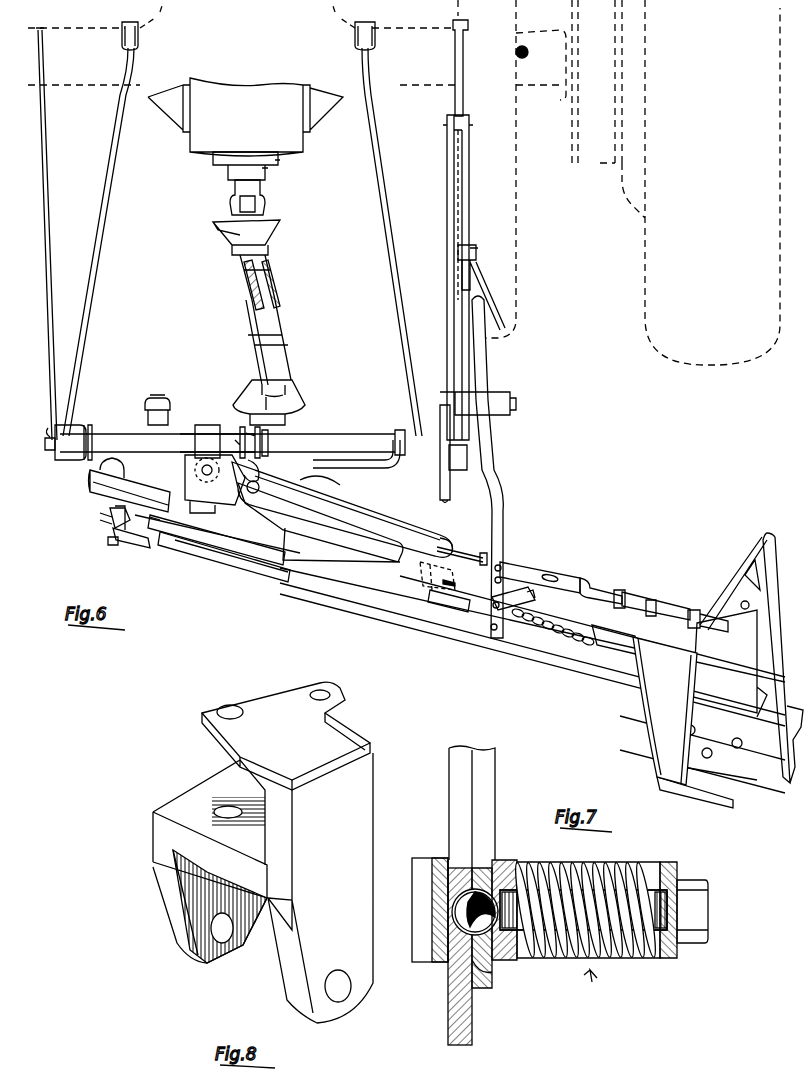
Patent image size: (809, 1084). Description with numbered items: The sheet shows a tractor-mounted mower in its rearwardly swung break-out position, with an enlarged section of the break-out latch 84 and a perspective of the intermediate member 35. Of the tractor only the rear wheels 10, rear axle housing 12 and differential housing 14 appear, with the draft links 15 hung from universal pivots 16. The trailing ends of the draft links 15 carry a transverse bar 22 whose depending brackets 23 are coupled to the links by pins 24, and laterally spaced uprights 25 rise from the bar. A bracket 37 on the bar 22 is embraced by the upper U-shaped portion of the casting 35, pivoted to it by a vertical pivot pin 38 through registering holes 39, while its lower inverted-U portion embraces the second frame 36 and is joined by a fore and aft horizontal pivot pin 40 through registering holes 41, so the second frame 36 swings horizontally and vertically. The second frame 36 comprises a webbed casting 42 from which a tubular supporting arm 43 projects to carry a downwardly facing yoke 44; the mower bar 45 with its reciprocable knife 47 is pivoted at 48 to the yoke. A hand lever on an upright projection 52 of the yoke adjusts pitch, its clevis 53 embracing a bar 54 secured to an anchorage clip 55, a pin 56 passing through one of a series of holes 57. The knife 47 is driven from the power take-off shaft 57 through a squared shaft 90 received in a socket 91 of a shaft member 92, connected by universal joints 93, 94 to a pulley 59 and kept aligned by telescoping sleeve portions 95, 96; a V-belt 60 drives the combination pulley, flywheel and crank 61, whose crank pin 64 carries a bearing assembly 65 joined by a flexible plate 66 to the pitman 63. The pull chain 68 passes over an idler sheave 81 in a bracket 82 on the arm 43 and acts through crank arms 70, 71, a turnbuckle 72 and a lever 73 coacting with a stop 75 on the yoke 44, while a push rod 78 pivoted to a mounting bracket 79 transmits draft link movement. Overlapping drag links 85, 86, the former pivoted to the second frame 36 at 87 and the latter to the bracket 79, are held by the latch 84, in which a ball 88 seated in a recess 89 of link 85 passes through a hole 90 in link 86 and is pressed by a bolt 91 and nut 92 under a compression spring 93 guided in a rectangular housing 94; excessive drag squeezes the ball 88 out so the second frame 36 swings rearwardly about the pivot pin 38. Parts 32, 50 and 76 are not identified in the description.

In FIG. 6, the rear wheels 10 is at (645, 268).
In FIG. 6, the rear axle housing 12 is at (418, 88).
In FIG. 6, the differential housing 14 is at (305, 150).
In FIG. 6, the draft links 15 is at (108, 212).
In FIG. 6, the universal pivots 16 is at (140, 34).
In FIG. 6, the transverse bar 22 is at (112, 432).
In FIG. 6, the depending brackets 23 is at (74, 460).
In FIG. 6, the pins 24 is at (52, 450).
In FIG. 6, the uprights 25 is at (250, 398).
In FIG. 6, the rod 32 is at (47, 145).
In FIG. 6, the intermediate member 35 is at (190, 470).
In FIG. 8, the intermediate member 35 is at (372, 750).
In FIG. 6, the second frame 36 is at (372, 568).
In FIG. 6, the bracket 37 is at (205, 425).
In FIG. 6, the vertical pivot pin 38 is at (196, 455).
In FIG. 8, the registering holes 39 is at (222, 708).
In FIG. 6, the horizontal pivot pin 40 is at (190, 530).
In FIG. 8, the registering holes 41 is at (228, 935).
In FIG. 6, the casting 42 is at (318, 492).
In FIG. 6, the tubular supporting arm 43 is at (400, 625).
In FIG. 6, the yoke 44 is at (640, 718).
In FIG. 6, the mower bar 45 is at (761, 790).
In FIG. 6, the knife 47 is at (755, 690).
In FIG. 6, the pivot 48 is at (660, 782).
In FIG. 6, the rod 50 is at (578, 588).
In FIG. 6, the upright projection 52 is at (625, 600).
In FIG. 6, the clevis 53 is at (520, 572).
In FIG. 6, the bar 54 is at (495, 478).
In FIG. 6, the anchorage clip 55 is at (472, 252).
In FIG. 6, the pin 56 is at (520, 612).
In FIG. 6, the power take-off shaft 57 is at (232, 176).
In FIG. 6, the pulley 59 is at (300, 548).
In FIG. 6, the V-belt 60 is at (248, 550).
In FIG. 6, the combination pulley, flywheel and crank 61 is at (88, 502).
In FIG. 6, the pitman 63 is at (340, 600).
In FIG. 6, the crank pin 64 is at (100, 517).
In FIG. 6, the bearing assembly 65 is at (104, 540).
In FIG. 6, the sheet metal plate 66 is at (160, 550).
In FIG. 6, the pull chain 68 is at (565, 633).
In FIG. 6, the crank arm 70 is at (592, 652).
In FIG. 6, the crank arm 71 is at (625, 598).
In FIG. 6, the turnbuckle 72 is at (652, 602).
In FIG. 6, the lever 73 is at (735, 590).
In FIG. 6, the stop 75 is at (694, 612).
In FIG. 6, the rod 76 is at (385, 474).
In FIG. 6, the push rod 78 is at (447, 226).
In FIG. 6, the mounting bracket 79 is at (462, 103).
In FIG. 6, the idler sheave 81 is at (440, 615).
In FIG. 6, the bracket 82 is at (450, 592).
In FIG. 6, the latch 84 is at (511, 383).
In FIG. 7, the latch 84 is at (597, 978).
In FIG. 6, the drag link 85 is at (442, 496).
In FIG. 7, the drag link 85 is at (458, 1030).
In FIG. 6, the drag link 86 is at (470, 188).
In FIG. 7, the drag link 86 is at (495, 812).
In FIG. 6, the pivot 87 is at (444, 534).
In FIG. 7, the ball 88 is at (458, 912).
In FIG. 7, the recess 89 is at (430, 923).
In FIG. 6, the squared shaft 90 is at (272, 278).
In FIG. 7, the squared shaft 90 is at (494, 970).
In FIG. 6, the bolt 91 is at (270, 272).
In FIG. 7, the bolt 91 is at (708, 910).
In FIG. 6, the nut 92 is at (268, 246).
In FIG. 7, the nut 92 is at (512, 866).
In FIG. 6, the compression spring 93 is at (290, 418).
In FIG. 7, the compression spring 93 is at (585, 866).
In FIG. 6, the housing 94 is at (238, 205).
In FIG. 7, the housing 94 is at (668, 866).
In FIG. 6, the telescoping sleeve portion 95 is at (246, 305).
In FIG. 6, the telescoping sleeve portion 96 is at (243, 290).